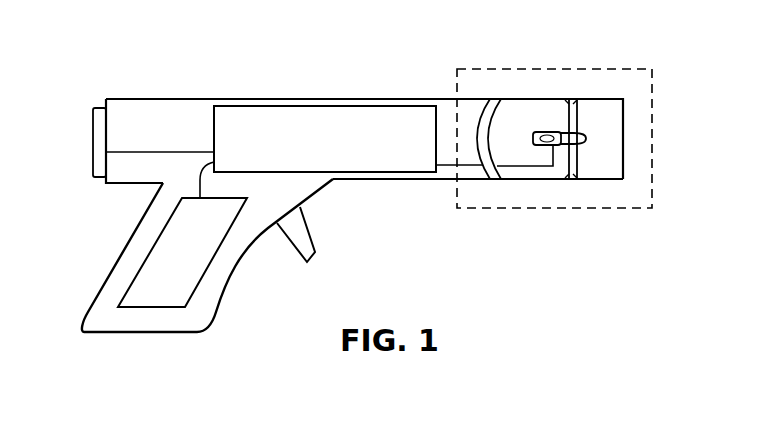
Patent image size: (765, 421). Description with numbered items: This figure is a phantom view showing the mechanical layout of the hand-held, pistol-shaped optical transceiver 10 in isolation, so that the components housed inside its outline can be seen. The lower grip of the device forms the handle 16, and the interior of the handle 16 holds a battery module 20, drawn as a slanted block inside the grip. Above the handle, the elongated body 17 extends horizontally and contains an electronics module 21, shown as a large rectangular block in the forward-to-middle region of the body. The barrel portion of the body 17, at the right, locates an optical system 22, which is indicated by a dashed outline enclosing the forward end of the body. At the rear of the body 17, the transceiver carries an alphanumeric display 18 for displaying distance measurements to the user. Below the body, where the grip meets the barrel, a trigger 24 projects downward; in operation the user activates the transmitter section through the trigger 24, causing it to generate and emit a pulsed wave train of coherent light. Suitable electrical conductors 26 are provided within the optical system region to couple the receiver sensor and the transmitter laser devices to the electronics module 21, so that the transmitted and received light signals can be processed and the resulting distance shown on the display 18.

The transceiver 10 is at (233, 68).
The handle 16 is at (229, 275).
The body 17 is at (391, 99).
The alphanumeric display 18 is at (100, 128).
The battery module 20 is at (137, 287).
The electronics module 21 is at (316, 125).
The optical system 22 is at (547, 68).
The trigger 24 is at (302, 238).
The electrical conductors 26 is at (530, 181).